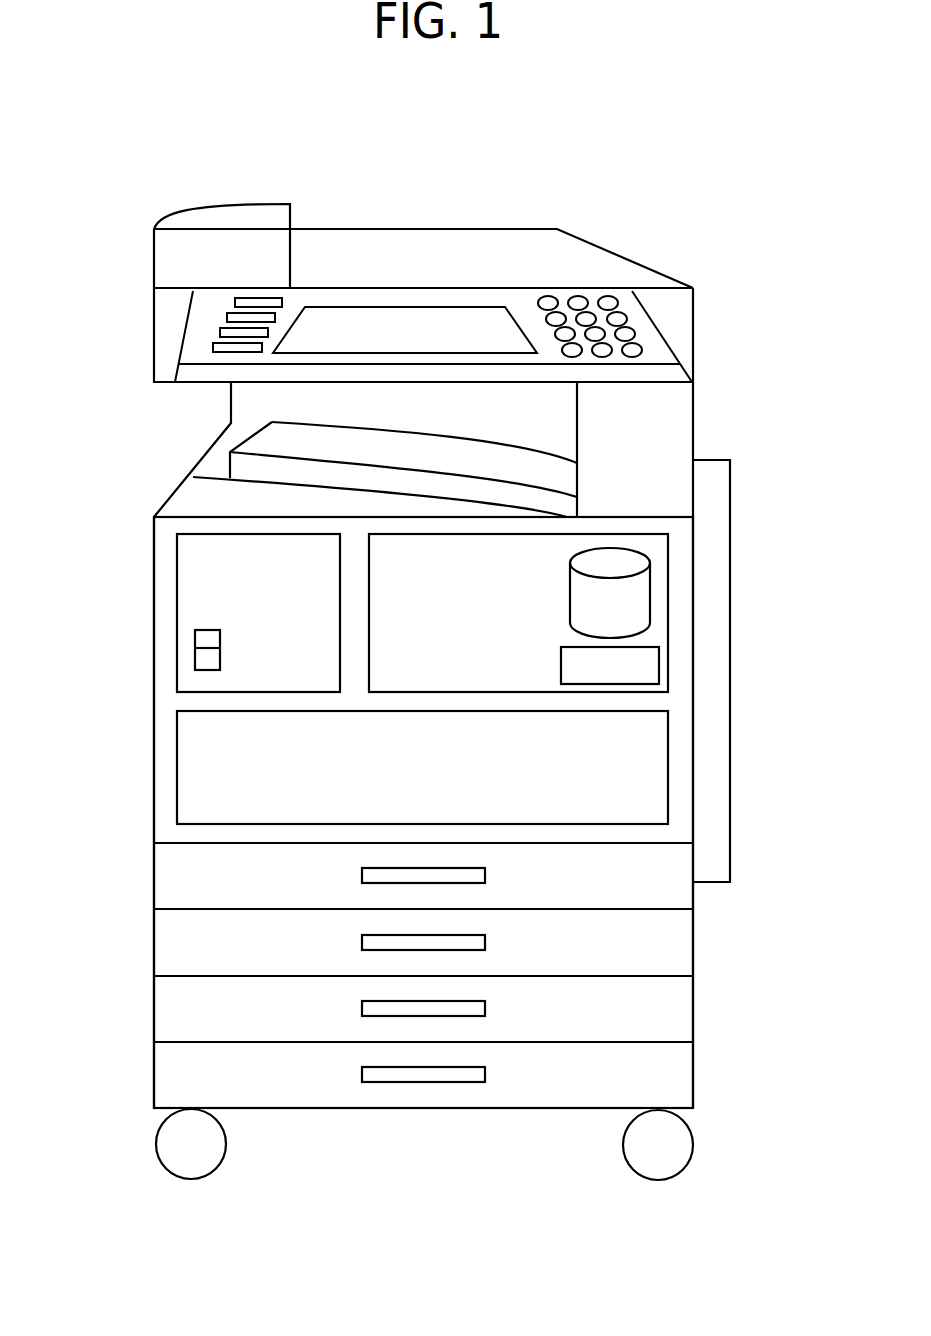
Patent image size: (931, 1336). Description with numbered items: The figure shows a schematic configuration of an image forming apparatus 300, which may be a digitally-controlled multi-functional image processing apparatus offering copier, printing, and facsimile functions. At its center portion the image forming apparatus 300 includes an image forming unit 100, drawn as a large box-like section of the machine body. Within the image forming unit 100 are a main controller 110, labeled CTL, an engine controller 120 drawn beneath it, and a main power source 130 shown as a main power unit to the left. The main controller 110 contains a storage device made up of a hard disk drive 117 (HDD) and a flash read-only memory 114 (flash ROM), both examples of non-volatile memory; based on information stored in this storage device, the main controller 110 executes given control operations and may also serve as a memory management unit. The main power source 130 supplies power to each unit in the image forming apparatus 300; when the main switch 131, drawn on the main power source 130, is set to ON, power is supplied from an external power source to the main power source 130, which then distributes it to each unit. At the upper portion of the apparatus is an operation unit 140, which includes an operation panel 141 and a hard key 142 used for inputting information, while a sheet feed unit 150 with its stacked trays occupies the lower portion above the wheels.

The image forming apparatus 300 is at (645, 203).
The image forming unit 100 is at (680, 701).
The main controller 110 is at (663, 614).
The flash read-only memory 114 is at (561, 663).
The hard disk drive 117 is at (571, 593).
The engine controller 120 is at (665, 770).
The main power source 130 is at (181, 565).
The main switch 131 is at (200, 655).
The operation unit 140 is at (640, 317).
The operation panel 141 is at (370, 318).
The hard key 142 is at (643, 349).
The sheet feed unit 150 is at (682, 1013).